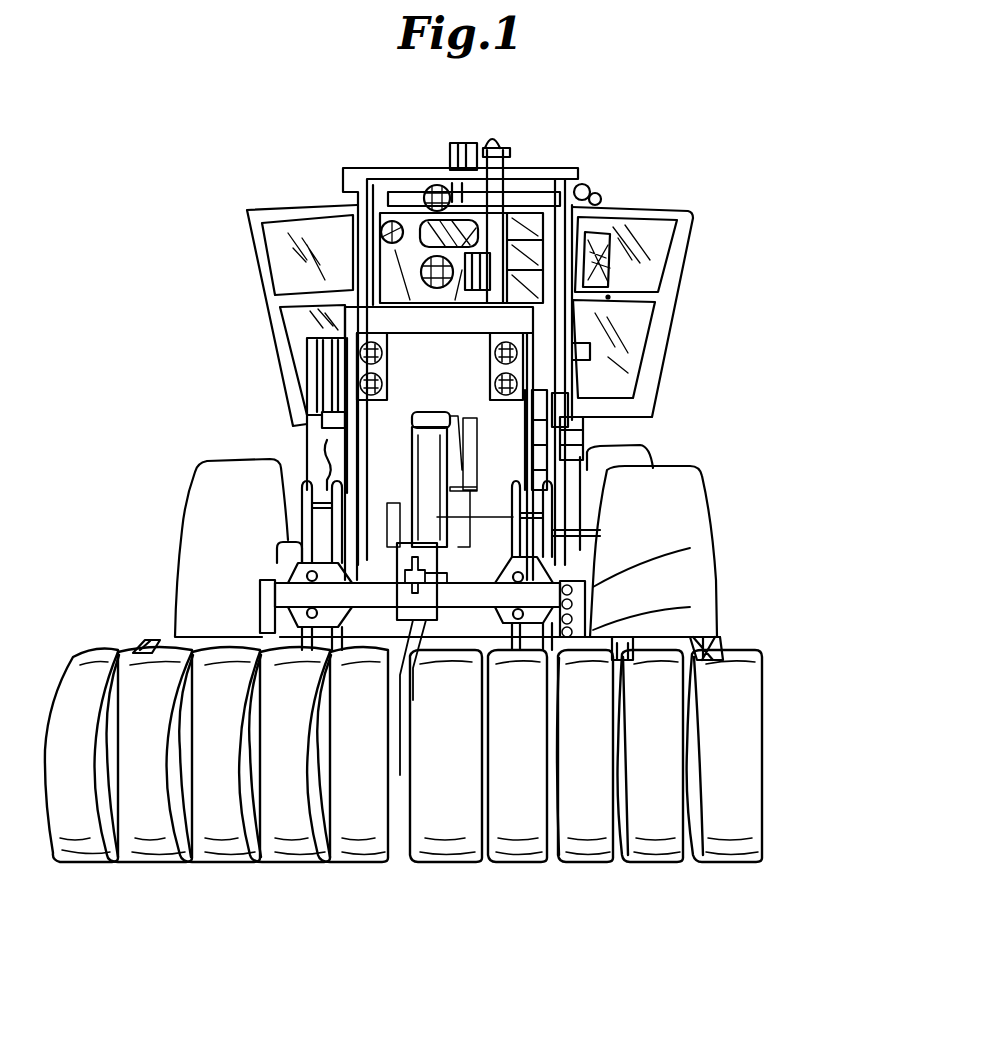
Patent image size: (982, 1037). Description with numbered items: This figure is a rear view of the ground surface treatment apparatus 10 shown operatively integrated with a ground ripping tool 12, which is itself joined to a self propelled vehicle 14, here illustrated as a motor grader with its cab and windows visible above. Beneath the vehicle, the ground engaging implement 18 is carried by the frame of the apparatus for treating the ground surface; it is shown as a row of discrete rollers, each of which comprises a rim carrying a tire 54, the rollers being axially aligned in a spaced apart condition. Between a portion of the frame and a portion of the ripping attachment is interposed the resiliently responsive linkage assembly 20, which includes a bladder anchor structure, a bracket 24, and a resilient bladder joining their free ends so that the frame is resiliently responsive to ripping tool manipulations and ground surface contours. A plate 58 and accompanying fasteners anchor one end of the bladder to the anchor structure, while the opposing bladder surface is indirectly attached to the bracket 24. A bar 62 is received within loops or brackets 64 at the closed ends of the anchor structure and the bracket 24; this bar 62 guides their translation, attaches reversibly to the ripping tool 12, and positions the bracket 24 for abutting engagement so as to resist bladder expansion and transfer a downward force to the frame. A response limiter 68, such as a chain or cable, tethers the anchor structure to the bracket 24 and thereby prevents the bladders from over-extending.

The ground surface treatment apparatus 10 is at (786, 684).
The ground ripping tool 12 is at (318, 554).
The self propelled vehicle 14 is at (267, 373).
The ground engaging implement 18 is at (403, 808).
The resiliently responsive linkage assembly 20 is at (275, 594).
The bracket 24 is at (690, 548).
The tire 54 is at (231, 757).
The plate 58 is at (298, 565).
The bar 62 is at (393, 550).
The loops or brackets 64 is at (400, 500).
The response limiter 68 is at (690, 607).